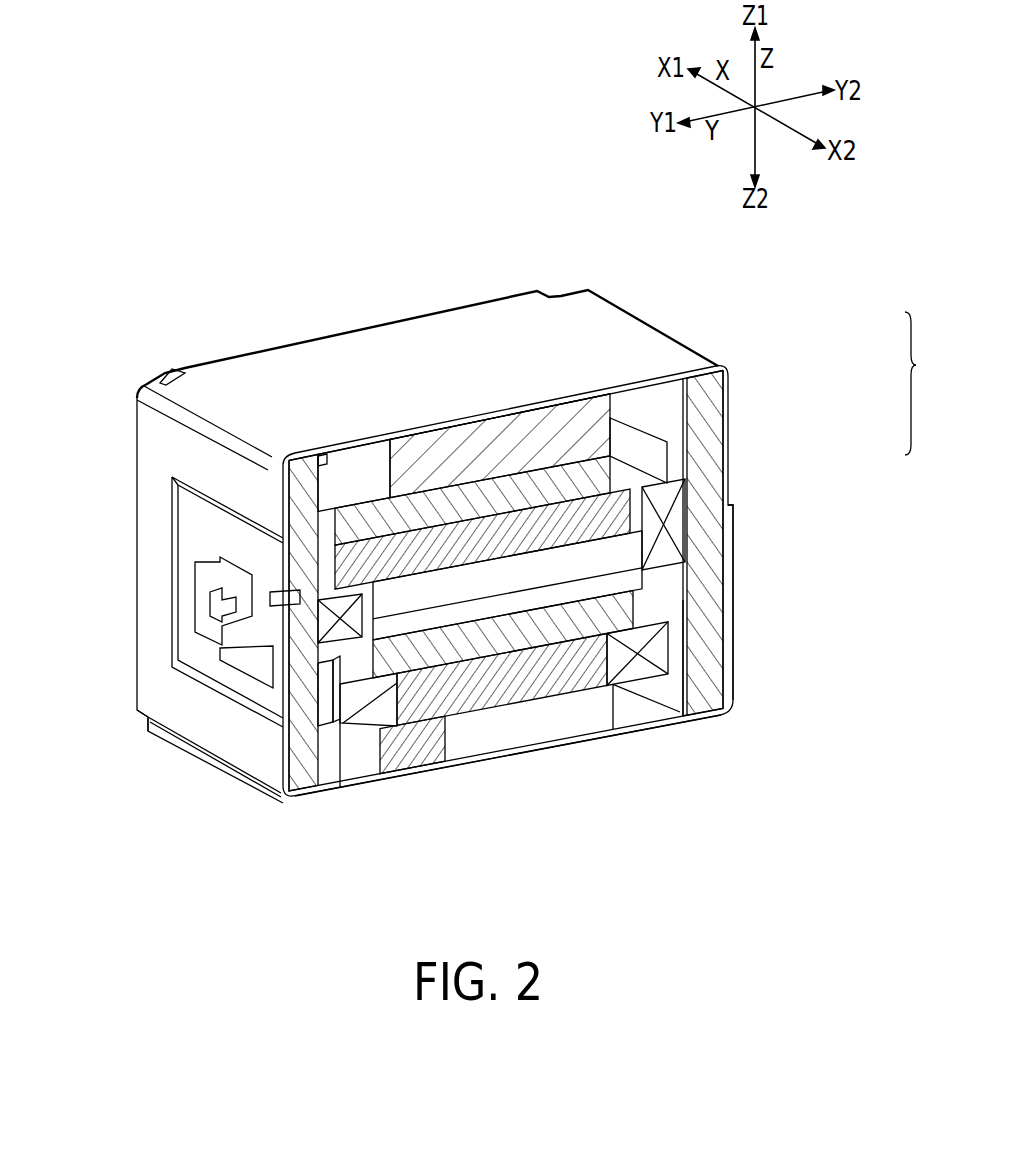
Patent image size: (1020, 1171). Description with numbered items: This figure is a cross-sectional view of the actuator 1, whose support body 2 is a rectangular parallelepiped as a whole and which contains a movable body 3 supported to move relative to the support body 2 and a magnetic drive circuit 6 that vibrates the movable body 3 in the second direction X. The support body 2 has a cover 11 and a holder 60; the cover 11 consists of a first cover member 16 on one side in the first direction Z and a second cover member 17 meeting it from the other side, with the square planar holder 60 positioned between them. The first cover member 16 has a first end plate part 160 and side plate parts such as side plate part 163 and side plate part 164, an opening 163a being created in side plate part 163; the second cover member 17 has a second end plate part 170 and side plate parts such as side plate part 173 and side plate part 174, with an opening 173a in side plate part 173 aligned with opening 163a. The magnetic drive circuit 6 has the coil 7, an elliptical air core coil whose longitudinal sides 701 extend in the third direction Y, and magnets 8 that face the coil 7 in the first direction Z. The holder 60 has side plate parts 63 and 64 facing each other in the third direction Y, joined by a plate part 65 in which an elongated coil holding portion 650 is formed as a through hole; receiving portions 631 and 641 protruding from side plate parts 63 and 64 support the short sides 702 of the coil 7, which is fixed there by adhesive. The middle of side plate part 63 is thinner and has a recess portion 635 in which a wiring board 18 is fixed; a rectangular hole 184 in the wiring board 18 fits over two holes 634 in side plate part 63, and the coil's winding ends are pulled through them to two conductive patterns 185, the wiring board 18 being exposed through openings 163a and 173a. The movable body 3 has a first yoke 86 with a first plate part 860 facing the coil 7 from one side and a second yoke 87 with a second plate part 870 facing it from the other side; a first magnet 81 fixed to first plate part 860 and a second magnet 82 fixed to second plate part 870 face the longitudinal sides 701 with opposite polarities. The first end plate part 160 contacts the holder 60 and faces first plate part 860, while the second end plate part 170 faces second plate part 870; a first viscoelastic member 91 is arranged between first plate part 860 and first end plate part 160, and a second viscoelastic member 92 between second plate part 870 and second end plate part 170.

The actuator 1 is at (480, 543).
The support body 2 is at (462, 554).
The movable body 3 is at (528, 372).
The magnetic drive circuit 6 is at (442, 585).
The coil 7 is at (560, 690).
The magnets 8 is at (466, 548).
The cover 11 is at (923, 383).
The first cover member 16 is at (680, 368).
The second cover member 17 is at (496, 667).
The wiring board 18 is at (150, 602).
The holder 60 is at (734, 535).
The side plate part 63 is at (293, 693).
The side plate part 64 is at (710, 490).
The plate part 65 is at (637, 507).
The first magnet 81 is at (465, 408).
The second magnet 82 is at (503, 730).
The first yoke 86 is at (455, 398).
The second yoke 87 is at (503, 730).
The first viscoelastic member 91 is at (490, 443).
The second viscoelastic member 92 is at (570, 713).
The first end plate part 160 is at (407, 330).
The side plate part 163 is at (155, 440).
The opening 163a is at (167, 553).
The side plate part 164 is at (728, 448).
The second end plate part 170 is at (373, 790).
The side plate part 173 is at (197, 748).
The opening 173a is at (172, 500).
The side plate part 174 is at (738, 672).
The rectangular hole 184 is at (163, 730).
The conductive patterns 185 is at (235, 598).
The receiving portion 631 is at (210, 716).
The holes 634 is at (175, 670).
The recess portion 635 is at (287, 797).
The receiving portion 641 is at (700, 632).
The coil holding portion 650 is at (672, 672).
The longitudinal side 701 is at (457, 690).
The short sides 702 is at (676, 557).
The first plate part 860 is at (430, 503).
The second plate part 870 is at (490, 690).